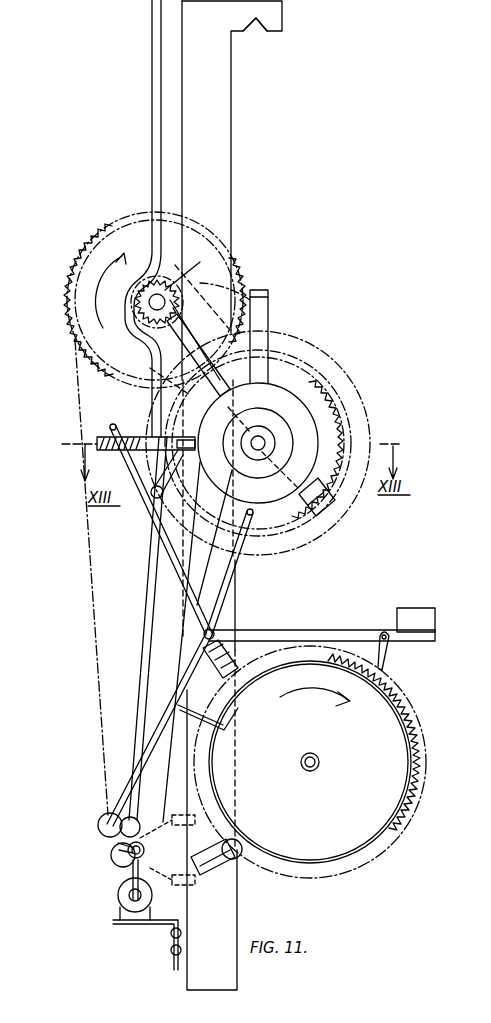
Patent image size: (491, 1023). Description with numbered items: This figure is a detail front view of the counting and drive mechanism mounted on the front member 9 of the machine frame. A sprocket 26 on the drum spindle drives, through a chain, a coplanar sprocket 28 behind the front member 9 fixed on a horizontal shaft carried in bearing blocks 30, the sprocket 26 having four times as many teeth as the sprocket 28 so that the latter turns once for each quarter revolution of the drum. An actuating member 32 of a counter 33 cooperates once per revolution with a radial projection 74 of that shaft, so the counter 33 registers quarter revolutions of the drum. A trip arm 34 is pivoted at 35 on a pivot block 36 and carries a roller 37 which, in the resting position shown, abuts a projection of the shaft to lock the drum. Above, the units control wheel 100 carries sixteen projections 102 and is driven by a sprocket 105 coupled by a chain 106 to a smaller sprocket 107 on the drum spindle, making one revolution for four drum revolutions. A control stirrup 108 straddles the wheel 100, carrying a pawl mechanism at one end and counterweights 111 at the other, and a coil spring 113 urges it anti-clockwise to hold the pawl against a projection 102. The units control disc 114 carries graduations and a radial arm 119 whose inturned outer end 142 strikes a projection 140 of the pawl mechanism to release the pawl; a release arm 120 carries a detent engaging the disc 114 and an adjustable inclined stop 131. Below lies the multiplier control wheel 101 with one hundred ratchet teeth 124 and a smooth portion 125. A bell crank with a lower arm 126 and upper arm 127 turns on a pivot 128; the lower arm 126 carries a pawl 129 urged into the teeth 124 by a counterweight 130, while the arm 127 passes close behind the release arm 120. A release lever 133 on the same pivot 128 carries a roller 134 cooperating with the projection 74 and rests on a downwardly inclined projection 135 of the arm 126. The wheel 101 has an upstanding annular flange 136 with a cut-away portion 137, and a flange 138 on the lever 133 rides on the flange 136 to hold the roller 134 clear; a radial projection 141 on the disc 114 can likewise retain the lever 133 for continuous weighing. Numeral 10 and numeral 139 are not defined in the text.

The front member 9 is at (220, 100).
The frame notch 10 is at (273, 20).
The sprocket 26 is at (154, 513).
The sprocket 28 is at (112, 858).
The bearing block 30 is at (165, 855).
The actuating member 32 is at (118, 895).
The counter 33 is at (135, 902).
The trip arm 34 is at (152, 15).
The pivot 35 is at (152, 495).
The pivot block 36 is at (177, 530).
The roller 37 is at (132, 818).
The radial projection 74 is at (128, 850).
The units control wheel 100 is at (355, 432).
The multiplier control wheel 101 is at (423, 768).
The projections 102 is at (333, 363).
The sprocket 105 is at (330, 400).
The chain 106 is at (235, 292).
The sprocket 107 is at (170, 296).
The control stirrup 108 is at (180, 365).
The counterweight 111 is at (322, 522).
The coil spring 113 is at (296, 440).
The units control disc 114 is at (305, 412).
The radially projecting arm 119 is at (268, 336).
The release arm 120 is at (122, 435).
The ratchet teeth 124 is at (345, 652).
The smooth portion 125 is at (405, 700).
The lower arm 126 is at (263, 628).
The upper arm 127 is at (180, 575).
The pivot 128 is at (204, 634).
The pawl 129 is at (386, 656).
The counterweight 130 is at (413, 612).
The adjustable inclined stop 131 is at (114, 477).
The release lever 133 is at (162, 722).
The roller 134 is at (108, 815).
The downwardly inclined projection 135 is at (203, 660).
The annular flange 136 is at (377, 837).
The cut-away portion 137 is at (232, 712).
The flange 138 is at (215, 740).
The lever 139 is at (152, 345).
The projection 140 is at (157, 302).
The radial projection 141 is at (175, 453).
The inturned outer end 142 is at (264, 302).